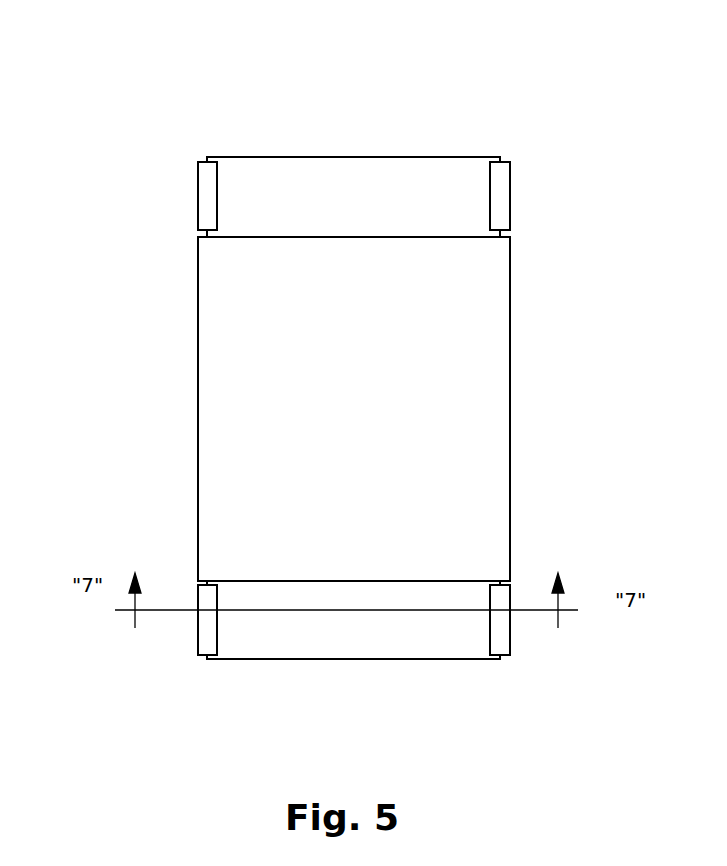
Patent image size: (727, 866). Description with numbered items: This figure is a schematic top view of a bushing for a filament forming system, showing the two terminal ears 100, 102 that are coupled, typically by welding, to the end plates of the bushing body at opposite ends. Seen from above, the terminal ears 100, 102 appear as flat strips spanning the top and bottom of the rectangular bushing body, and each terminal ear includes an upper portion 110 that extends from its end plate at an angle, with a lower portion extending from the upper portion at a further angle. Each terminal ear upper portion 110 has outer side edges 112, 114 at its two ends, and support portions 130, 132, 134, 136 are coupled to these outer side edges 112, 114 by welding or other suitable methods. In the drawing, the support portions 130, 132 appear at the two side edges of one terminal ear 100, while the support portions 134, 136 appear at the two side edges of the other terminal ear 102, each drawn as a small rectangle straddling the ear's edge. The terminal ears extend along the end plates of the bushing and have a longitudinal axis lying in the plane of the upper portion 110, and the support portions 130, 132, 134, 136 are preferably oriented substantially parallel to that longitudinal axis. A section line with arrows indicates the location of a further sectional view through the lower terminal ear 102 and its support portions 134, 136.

The terminal ear 100 is at (335, 177).
The terminal ear 102 is at (289, 643).
The upper portion 110 is at (413, 638).
The side edge 112 is at (207, 657).
The side edge 114 is at (500, 658).
The support portion 130 is at (202, 197).
The support portion 132 is at (510, 197).
The support portion 134 is at (203, 618).
The support portion 136 is at (510, 638).